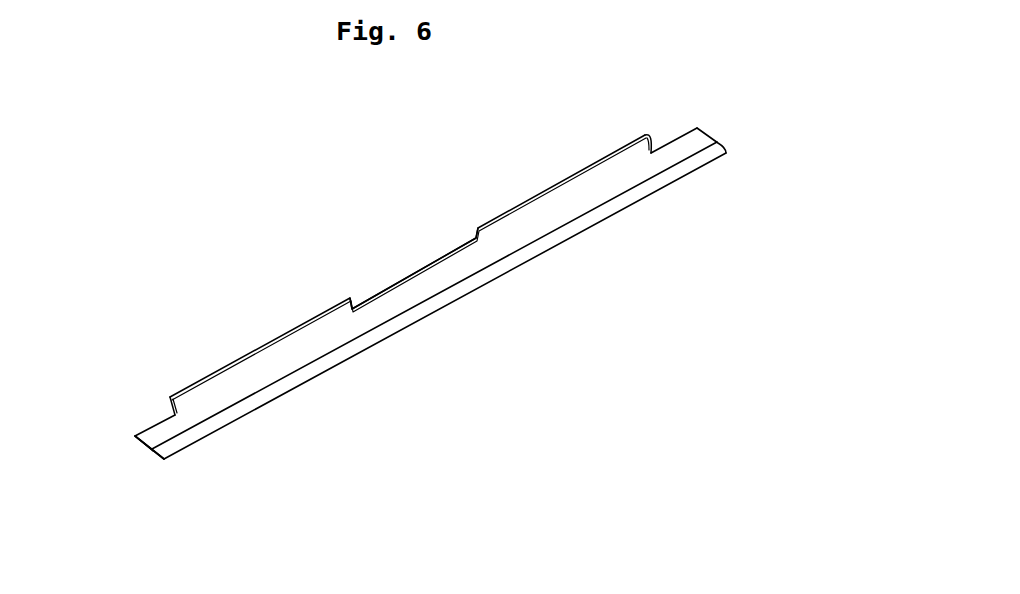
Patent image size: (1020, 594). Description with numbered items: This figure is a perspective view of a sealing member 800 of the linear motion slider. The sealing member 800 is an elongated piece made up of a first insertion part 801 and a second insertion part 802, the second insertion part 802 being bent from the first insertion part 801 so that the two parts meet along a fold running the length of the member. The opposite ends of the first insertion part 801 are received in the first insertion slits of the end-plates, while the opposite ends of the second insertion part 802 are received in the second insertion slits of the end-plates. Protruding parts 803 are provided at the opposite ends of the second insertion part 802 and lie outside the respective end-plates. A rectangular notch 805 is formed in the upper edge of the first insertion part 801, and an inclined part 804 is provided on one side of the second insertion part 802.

The sealing member 800 is at (388, 128).
The first insertion part 801 is at (319, 310).
The second insertion part 802 is at (185, 405).
The protruding part 803 is at (137, 440).
The inclined part 804 is at (176, 447).
The rectangular notch 805 is at (416, 267).